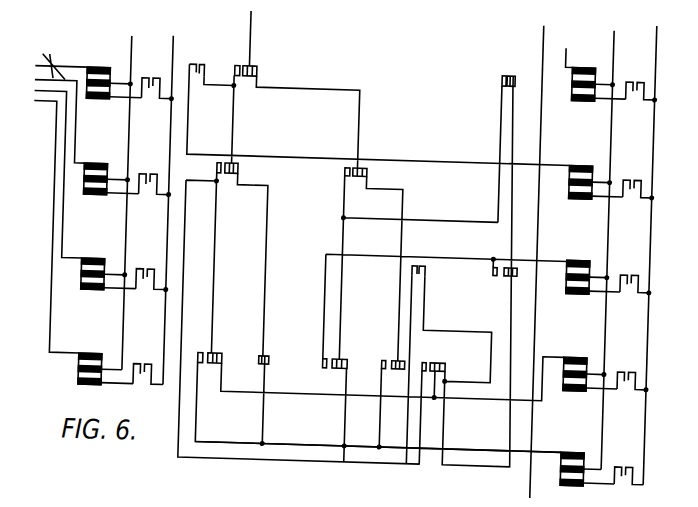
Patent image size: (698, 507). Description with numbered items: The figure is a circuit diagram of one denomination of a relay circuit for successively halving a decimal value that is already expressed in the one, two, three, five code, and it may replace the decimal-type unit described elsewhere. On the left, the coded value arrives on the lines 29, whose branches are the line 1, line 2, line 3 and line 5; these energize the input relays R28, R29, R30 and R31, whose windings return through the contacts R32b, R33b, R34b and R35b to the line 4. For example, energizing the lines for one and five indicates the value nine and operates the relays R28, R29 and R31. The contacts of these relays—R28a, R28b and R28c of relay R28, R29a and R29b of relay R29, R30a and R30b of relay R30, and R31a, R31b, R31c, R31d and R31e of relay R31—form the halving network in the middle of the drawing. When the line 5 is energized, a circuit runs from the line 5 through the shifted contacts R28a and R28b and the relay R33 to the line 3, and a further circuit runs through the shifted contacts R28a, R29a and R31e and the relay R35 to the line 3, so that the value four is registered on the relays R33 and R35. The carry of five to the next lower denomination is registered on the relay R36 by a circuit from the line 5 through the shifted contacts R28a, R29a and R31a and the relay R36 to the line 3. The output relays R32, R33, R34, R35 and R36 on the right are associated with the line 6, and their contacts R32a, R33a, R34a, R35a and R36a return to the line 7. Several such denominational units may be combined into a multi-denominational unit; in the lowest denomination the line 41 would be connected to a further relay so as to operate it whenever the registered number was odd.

The lines 29 is at (52, 58).
The line 41 is at (484, 444).
The line 1 is at (33, 109).
The line 2 is at (33, 99).
The line 3 is at (608, 45).
The line 4 is at (167, 43).
The line 5 is at (249, 32).
The line 6 is at (537, 40).
The line 7 is at (650, 32).
The relay R28 is at (96, 80).
The relay R29 is at (90, 169).
The relay R30 is at (87, 264).
The relay R31 is at (85, 359).
The relay R32 is at (578, 75).
The relay R33 is at (576, 173).
The relay R34 is at (573, 268).
The relay R35 is at (570, 365).
The relay R36 is at (567, 460).
The contacts R28a is at (262, 61).
The contacts R28b is at (208, 63).
The contacts R28c is at (503, 71).
The contacts R29a is at (236, 175).
The contacts R29b is at (358, 176).
The contacts R30a is at (501, 271).
The contacts R30b is at (418, 274).
The contacts R31a is at (230, 350).
The contacts R31b is at (288, 350).
The contacts R31c is at (352, 354).
The contacts R31d is at (394, 357).
The contacts R31e is at (435, 359).
The contacts R32a is at (632, 72).
The contacts R33a is at (632, 170).
The contacts R34a is at (632, 265).
The contacts R35a is at (632, 362).
The contacts R36a is at (632, 457).
The contacts R32b is at (152, 78).
The contacts R33b is at (152, 174).
The contacts R34b is at (152, 269).
The contacts R35b is at (152, 364).